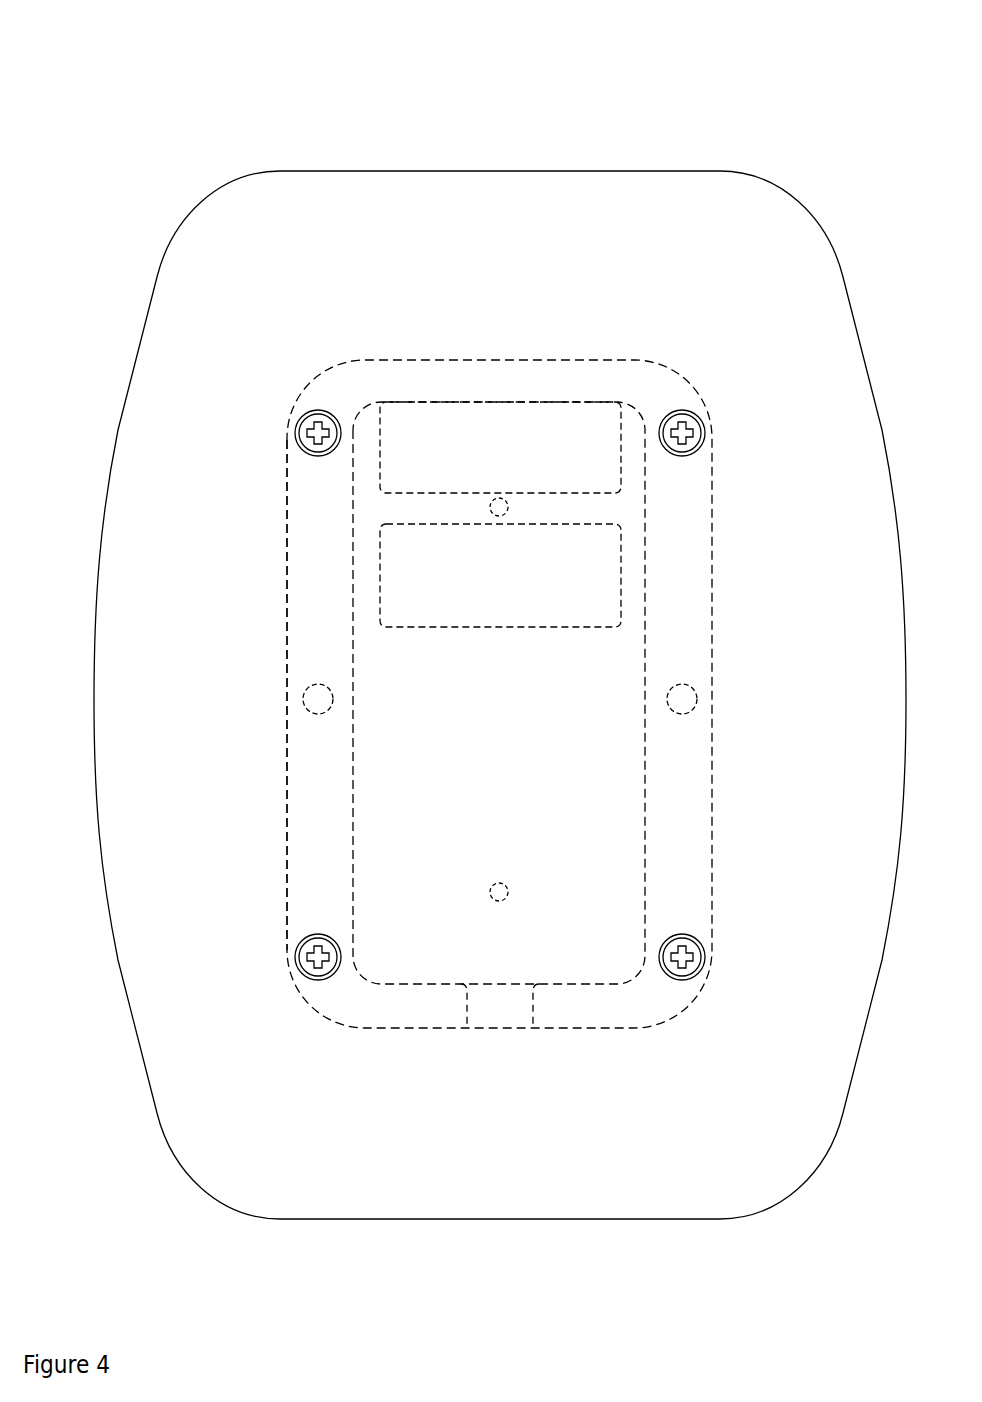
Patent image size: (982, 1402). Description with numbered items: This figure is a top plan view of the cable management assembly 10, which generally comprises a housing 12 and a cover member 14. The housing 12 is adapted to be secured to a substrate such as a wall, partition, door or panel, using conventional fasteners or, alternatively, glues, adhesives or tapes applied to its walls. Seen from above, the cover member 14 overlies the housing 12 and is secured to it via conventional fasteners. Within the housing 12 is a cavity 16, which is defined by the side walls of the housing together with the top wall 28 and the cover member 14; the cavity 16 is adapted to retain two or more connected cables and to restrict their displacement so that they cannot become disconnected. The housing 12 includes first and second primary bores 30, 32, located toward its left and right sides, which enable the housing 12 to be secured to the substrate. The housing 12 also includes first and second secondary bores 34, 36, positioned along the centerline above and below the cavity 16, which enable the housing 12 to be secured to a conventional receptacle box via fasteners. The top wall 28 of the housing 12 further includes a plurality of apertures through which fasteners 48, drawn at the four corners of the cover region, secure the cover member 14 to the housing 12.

The cable management assembly 10 is at (500, 611).
The housing 12 is at (683, 855).
The cover member 14 is at (500, 695).
The cavity 16 is at (508, 787).
The top wall 28 is at (317, 842).
The first primary bore 30 is at (303, 698).
The second primary bore 32 is at (697, 699).
The first secondary bore 34 is at (508, 507).
The second secondary bore 36 is at (508, 892).
The fastener 48 is at (700, 957).